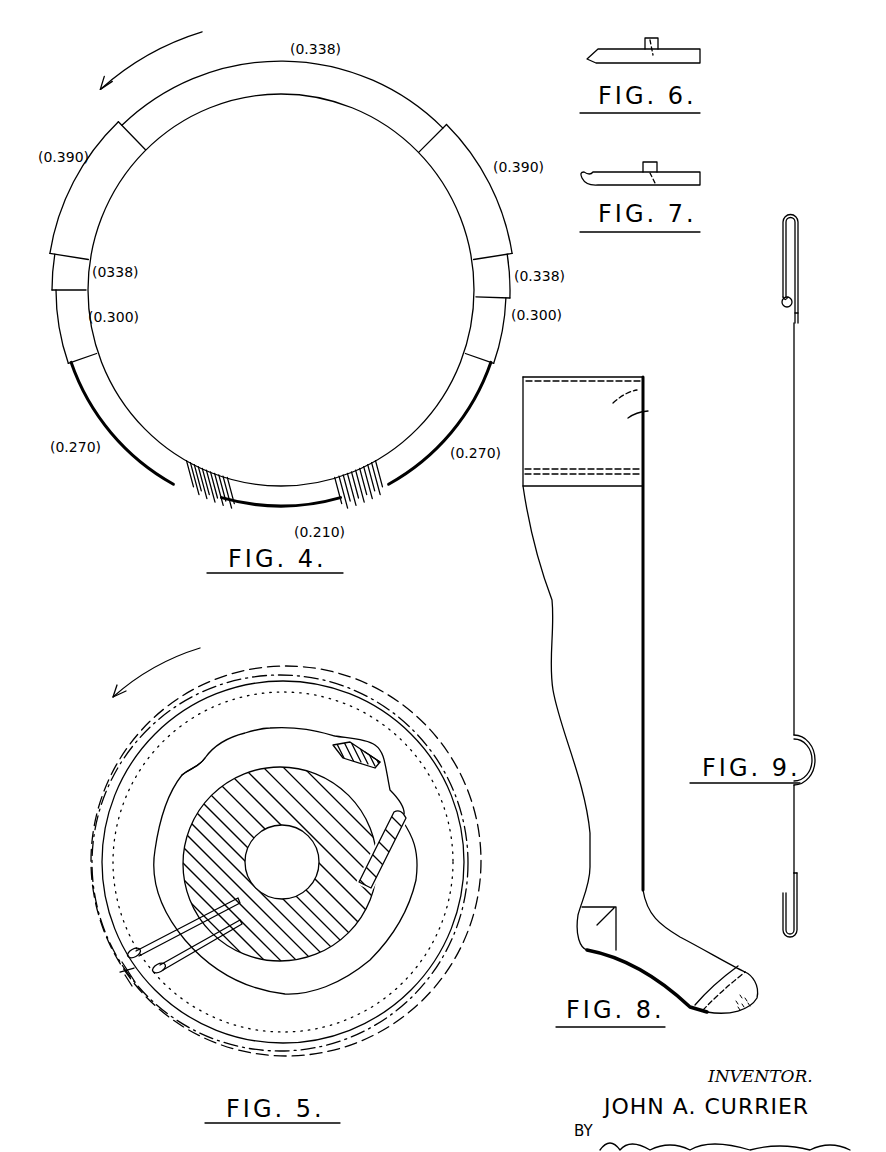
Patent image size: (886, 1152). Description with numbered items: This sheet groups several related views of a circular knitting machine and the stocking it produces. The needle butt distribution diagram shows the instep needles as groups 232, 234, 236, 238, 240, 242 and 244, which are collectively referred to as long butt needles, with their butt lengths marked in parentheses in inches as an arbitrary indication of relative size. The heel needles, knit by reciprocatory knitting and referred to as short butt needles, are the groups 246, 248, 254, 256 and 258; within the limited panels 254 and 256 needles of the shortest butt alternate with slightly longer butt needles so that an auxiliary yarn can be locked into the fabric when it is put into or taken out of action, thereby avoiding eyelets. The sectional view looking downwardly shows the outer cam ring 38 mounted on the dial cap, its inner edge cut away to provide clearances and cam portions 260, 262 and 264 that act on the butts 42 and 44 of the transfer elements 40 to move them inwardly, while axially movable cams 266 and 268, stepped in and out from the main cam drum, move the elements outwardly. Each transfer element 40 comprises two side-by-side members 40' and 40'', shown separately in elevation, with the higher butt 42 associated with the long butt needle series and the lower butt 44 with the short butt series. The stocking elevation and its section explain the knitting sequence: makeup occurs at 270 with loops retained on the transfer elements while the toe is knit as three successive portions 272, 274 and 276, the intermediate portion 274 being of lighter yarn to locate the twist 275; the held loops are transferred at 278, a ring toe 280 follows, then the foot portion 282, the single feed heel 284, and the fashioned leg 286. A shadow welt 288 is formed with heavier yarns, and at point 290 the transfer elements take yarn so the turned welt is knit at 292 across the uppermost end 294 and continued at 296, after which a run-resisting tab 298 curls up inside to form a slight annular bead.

In FIG. 4, the instep needle group 232 is at (238, 72).
In FIG. 4, the instep needle group 234 is at (102, 137).
In FIG. 4, the instep needle group 236 is at (470, 150).
In FIG. 4, the instep needle group 238 is at (75, 262).
In FIG. 4, the instep needle group 240 is at (497, 274).
In FIG. 4, the instep needle group 242 is at (84, 340).
In FIG. 4, the instep needle group 244 is at (494, 342).
In FIG. 4, the heel needle group 246 is at (92, 402).
In FIG. 4, the heel needle group 248 is at (463, 414).
In FIG. 4, the eyelet prevention needle panel 254 is at (192, 453).
In FIG. 4, the eyelet prevention needle panel 256 is at (369, 458).
In FIG. 4, the heel needle group 258 is at (267, 512).
In FIG. 5, the outer cam ring 38 is at (132, 785).
In FIG. 5, the transfer element 40 is at (171, 951).
In FIG. 7, the transfer element member 40' is at (630, 189).
In FIG. 6, the transfer element member 40'' is at (643, 42).
In FIG. 6, the high butt 42 is at (655, 38).
In FIG. 7, the high butt 42 is at (648, 163).
In FIG. 6, the low butt 44 is at (663, 68).
In FIG. 7, the low butt 44 is at (663, 172).
In FIG. 5, the cam portion 260 is at (405, 796).
In FIG. 5, the cam portion 262 is at (356, 738).
In FIG. 5, the cam portion 264 is at (194, 768).
In FIG. 5, the axially movable cam 266 is at (398, 860).
In FIG. 5, the axially movable cam 268 is at (365, 752).
In FIG. 9, the makeup 270 is at (792, 892).
In FIG. 8, the first toe portion 272 is at (708, 1013).
In FIG. 9, the first toe portion 272 is at (783, 917).
In FIG. 8, the intermediate toe portion 274 is at (750, 1009).
In FIG. 9, the intermediate toe portion 274 is at (792, 940).
In FIG. 8, the twist 275 is at (747, 1026).
In FIG. 8, the third toe portion 276 is at (747, 990).
In FIG. 9, the third toe portion 276 is at (798, 920).
In FIG. 8, the loop transfer point 278 is at (737, 982).
In FIG. 9, the loop transfer point 278 is at (798, 893).
In FIG. 8, the ring toe 280 is at (727, 972).
In FIG. 9, the ring toe 280 is at (798, 875).
In FIG. 8, the foot portion 282 is at (678, 932).
In FIG. 9, the foot portion 282 is at (796, 807).
In FIG. 8, the heel 284 is at (593, 940).
In FIG. 9, the heel 284 is at (812, 750).
In FIG. 8, the leg 286 is at (629, 730).
In FIG. 9, the leg 286 is at (796, 577).
In FIG. 8, the shadow welt 288 is at (627, 481).
In FIG. 9, the shadow welt 288 is at (800, 315).
In FIG. 8, the welt start point 290 is at (548, 468).
In FIG. 9, the welt start point 290 is at (796, 297).
In FIG. 8, the turned welt knitting 292 is at (656, 412).
In FIG. 9, the turned welt knitting 292 is at (800, 237).
In FIG. 8, the uppermost end 294 is at (590, 377).
In FIG. 9, the uppermost end 294 is at (793, 214).
In FIG. 8, the turned welt continuation 296 is at (641, 392).
In FIG. 9, the turned welt continuation 296 is at (782, 234).
In FIG. 8, the run-resisting tab 298 is at (600, 474).
In FIG. 9, the run-resisting tab 298 is at (782, 301).